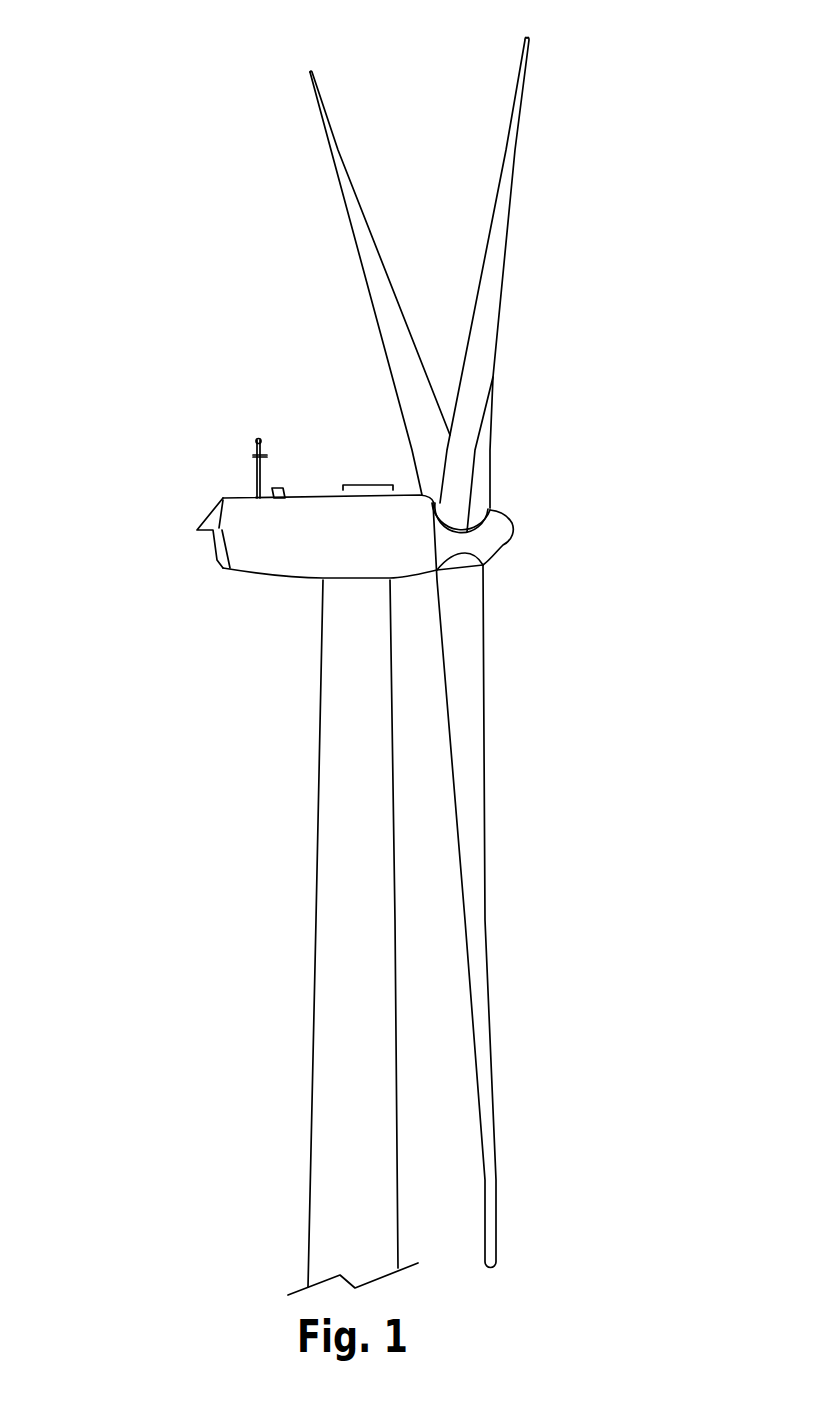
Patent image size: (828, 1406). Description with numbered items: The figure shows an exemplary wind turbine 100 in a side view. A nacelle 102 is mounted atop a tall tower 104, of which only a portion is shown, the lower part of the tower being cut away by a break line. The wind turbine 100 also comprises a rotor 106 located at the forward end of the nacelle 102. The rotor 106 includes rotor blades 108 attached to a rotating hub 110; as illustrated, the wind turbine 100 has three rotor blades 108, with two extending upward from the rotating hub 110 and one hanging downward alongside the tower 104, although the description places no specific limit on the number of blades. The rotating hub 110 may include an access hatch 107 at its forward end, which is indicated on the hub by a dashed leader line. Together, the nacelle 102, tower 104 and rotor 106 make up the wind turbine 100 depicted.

The wind turbine 100 is at (168, 250).
The nacelle 102 is at (270, 577).
The tower 104 is at (318, 805).
The rotor 106 is at (585, 285).
The access hatch 107 is at (512, 525).
The rotor blades 108 is at (338, 137).
The rotating hub 110 is at (503, 546).